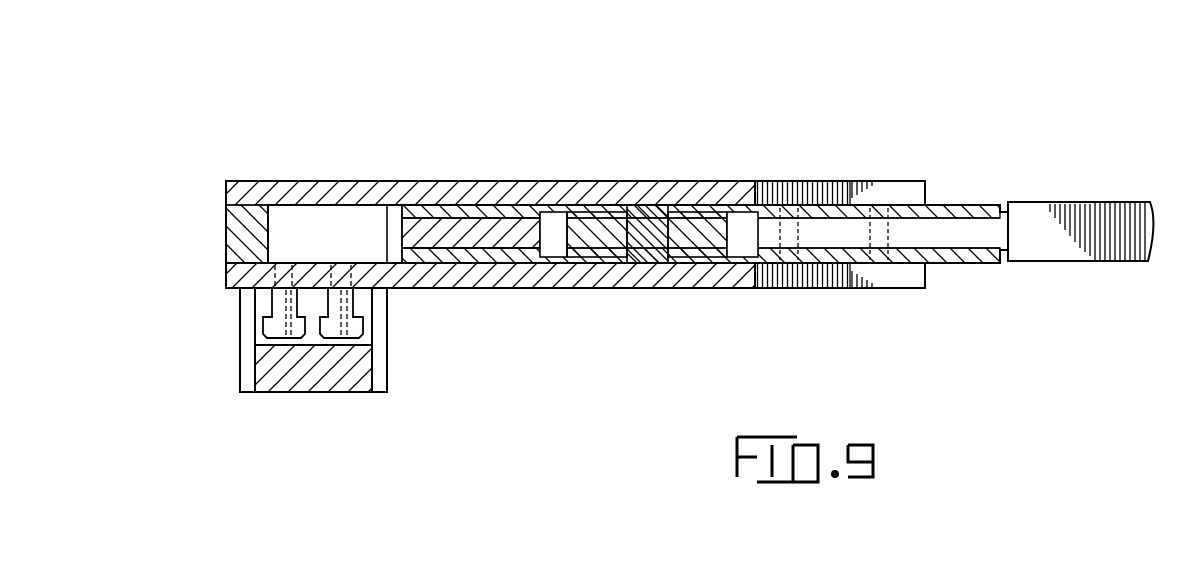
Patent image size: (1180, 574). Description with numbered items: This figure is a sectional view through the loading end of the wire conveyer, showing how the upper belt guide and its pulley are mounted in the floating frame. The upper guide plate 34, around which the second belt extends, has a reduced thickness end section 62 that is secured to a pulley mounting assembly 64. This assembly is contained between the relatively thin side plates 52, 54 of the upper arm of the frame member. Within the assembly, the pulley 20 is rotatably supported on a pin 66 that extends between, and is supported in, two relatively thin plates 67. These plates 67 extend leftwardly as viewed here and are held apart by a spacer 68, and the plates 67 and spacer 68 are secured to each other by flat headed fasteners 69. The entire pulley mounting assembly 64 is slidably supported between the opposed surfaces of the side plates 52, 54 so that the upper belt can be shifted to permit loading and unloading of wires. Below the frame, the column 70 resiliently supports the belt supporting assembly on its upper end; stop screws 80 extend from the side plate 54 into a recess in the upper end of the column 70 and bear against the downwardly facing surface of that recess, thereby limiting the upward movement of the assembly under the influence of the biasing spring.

The pulley 20 is at (690, 248).
The upper guide plate 34 is at (1062, 250).
The side plate 52 is at (500, 186).
The side plate 54 is at (526, 282).
The reduced thickness end section 62 is at (940, 238).
The pulley mounting assembly 64 is at (996, 204).
The pin 66 is at (645, 213).
The plates 67 is at (515, 212).
The spacer 68 is at (463, 228).
The flat headed fasteners 69 is at (958, 203).
The column 70 is at (300, 392).
The stop screws 80 is at (280, 303).